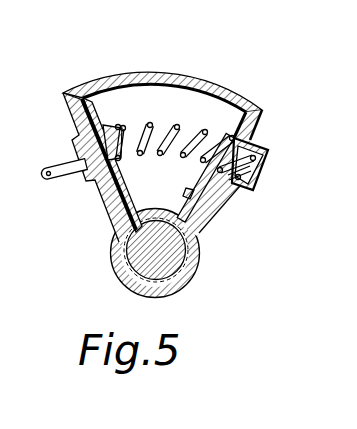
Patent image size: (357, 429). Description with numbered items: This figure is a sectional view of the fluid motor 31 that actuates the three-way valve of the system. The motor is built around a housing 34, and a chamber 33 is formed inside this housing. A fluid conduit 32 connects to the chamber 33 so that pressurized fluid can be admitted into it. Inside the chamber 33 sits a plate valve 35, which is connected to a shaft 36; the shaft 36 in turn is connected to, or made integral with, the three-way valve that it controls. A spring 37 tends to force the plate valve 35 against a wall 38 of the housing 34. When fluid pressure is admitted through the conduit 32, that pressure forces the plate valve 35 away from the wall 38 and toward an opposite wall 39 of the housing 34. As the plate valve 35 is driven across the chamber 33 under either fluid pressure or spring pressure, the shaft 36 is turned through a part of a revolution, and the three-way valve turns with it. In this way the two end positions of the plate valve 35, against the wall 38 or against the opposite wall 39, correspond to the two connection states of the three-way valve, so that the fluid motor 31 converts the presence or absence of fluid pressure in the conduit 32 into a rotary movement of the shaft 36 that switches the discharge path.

The fluid motor 31 is at (301, 130).
The fluid conduit 32 is at (70, 162).
The chamber 33 is at (122, 103).
The housing 34 is at (224, 88).
The plate valve 35 is at (123, 192).
The shaft 36 is at (186, 267).
The spring 37 is at (178, 125).
The wall 38 is at (115, 210).
The opposite wall 39 is at (200, 207).